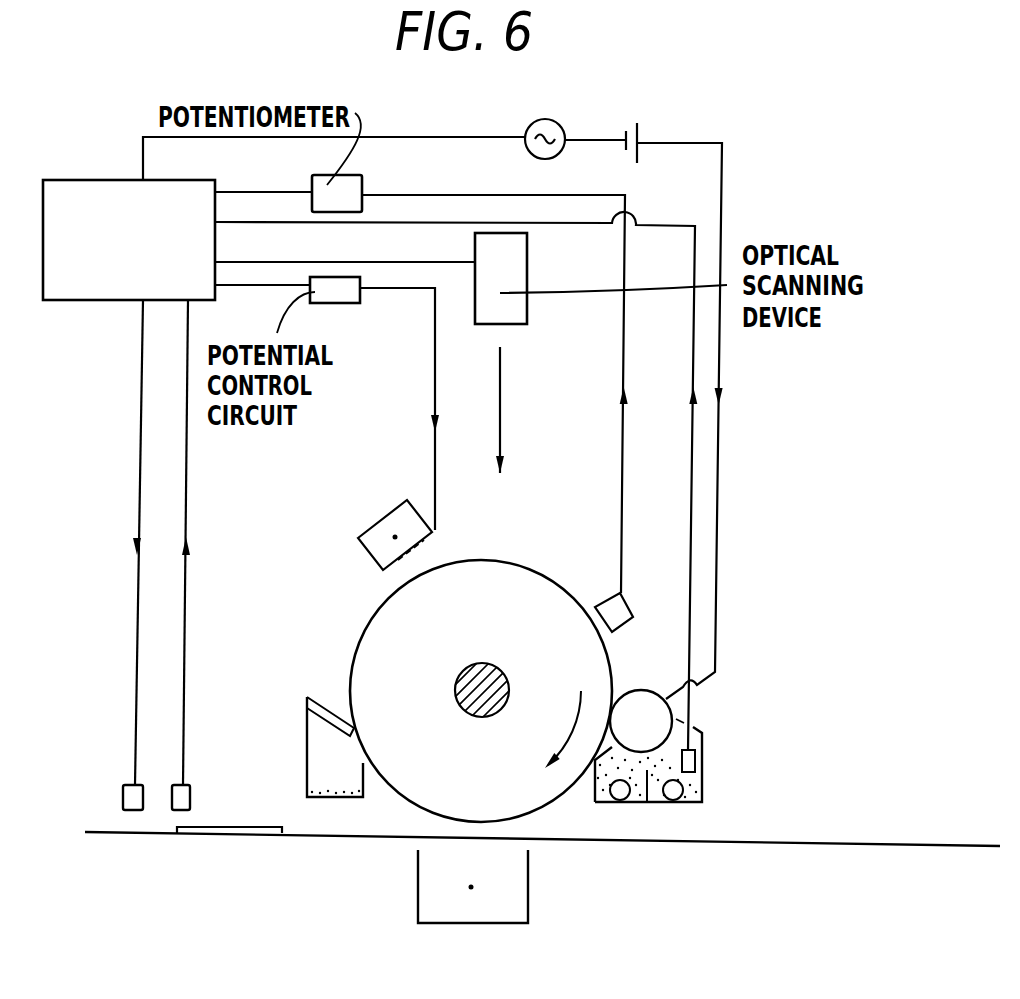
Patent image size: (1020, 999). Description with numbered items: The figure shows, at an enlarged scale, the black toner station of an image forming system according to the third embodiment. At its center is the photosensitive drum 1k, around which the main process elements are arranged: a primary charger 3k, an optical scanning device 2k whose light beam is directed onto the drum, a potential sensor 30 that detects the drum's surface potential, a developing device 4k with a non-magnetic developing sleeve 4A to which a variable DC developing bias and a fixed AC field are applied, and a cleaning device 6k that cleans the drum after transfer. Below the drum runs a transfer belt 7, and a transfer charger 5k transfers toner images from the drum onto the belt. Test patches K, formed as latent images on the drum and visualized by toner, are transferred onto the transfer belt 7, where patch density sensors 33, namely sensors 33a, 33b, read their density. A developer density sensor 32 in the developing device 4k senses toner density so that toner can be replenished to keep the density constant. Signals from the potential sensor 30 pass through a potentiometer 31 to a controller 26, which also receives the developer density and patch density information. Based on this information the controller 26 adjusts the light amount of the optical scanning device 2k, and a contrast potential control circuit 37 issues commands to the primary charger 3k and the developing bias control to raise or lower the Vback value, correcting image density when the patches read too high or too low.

The controller 26 is at (90, 178).
The potentiometer 31 is at (343, 174).
The contrast potential control circuit 37 is at (337, 303).
The optical scanning device 2k is at (527, 272).
The primary charger 3k is at (370, 525).
The photosensitive drum 1k is at (547, 578).
The potential sensor 30 is at (630, 605).
The non-magnetic developing sleeve 4A is at (660, 677).
The developer density sensor 32 is at (697, 757).
The developing device 4k is at (658, 802).
The patch density sensors 33 is at (130, 809).
The patch density sensor 33a is at (131, 810).
The patch density sensor 33b is at (180, 810).
The test patch K is at (245, 835).
The cleaning device 6k is at (333, 797).
The transfer charger 5k is at (528, 903).
The transfer belt 7 is at (817, 843).